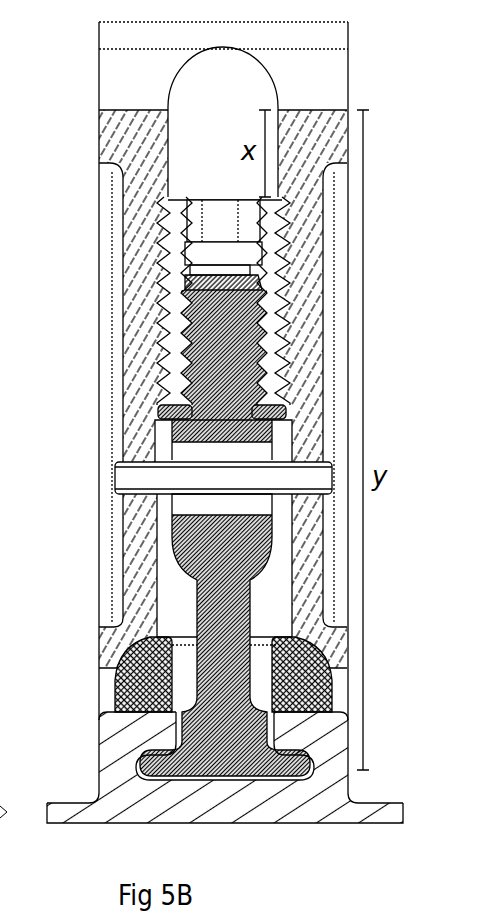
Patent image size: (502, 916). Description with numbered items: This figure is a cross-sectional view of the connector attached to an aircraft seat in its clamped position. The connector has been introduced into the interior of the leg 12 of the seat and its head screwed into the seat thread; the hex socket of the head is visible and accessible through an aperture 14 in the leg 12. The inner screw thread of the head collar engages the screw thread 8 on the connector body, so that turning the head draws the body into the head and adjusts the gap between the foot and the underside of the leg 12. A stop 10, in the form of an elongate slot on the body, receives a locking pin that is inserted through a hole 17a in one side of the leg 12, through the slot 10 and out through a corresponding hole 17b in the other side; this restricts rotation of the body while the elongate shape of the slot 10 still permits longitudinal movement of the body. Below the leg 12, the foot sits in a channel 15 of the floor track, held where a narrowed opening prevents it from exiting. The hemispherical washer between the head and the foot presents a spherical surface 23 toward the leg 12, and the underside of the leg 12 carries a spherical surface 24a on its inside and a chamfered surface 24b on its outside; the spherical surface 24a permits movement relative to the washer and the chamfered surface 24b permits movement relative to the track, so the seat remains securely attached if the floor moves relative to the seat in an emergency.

The aperture 14 is at (235, 73).
The screw thread 8 is at (238, 283).
The stop 10 is at (253, 450).
The hole 17a is at (127, 497).
The hole 17b is at (323, 495).
The leg 12 is at (338, 652).
The spherical surface 24a is at (313, 650).
The chamfered surface 24b is at (340, 670).
The spherical surface 23 is at (303, 696).
The channel 15 is at (140, 773).